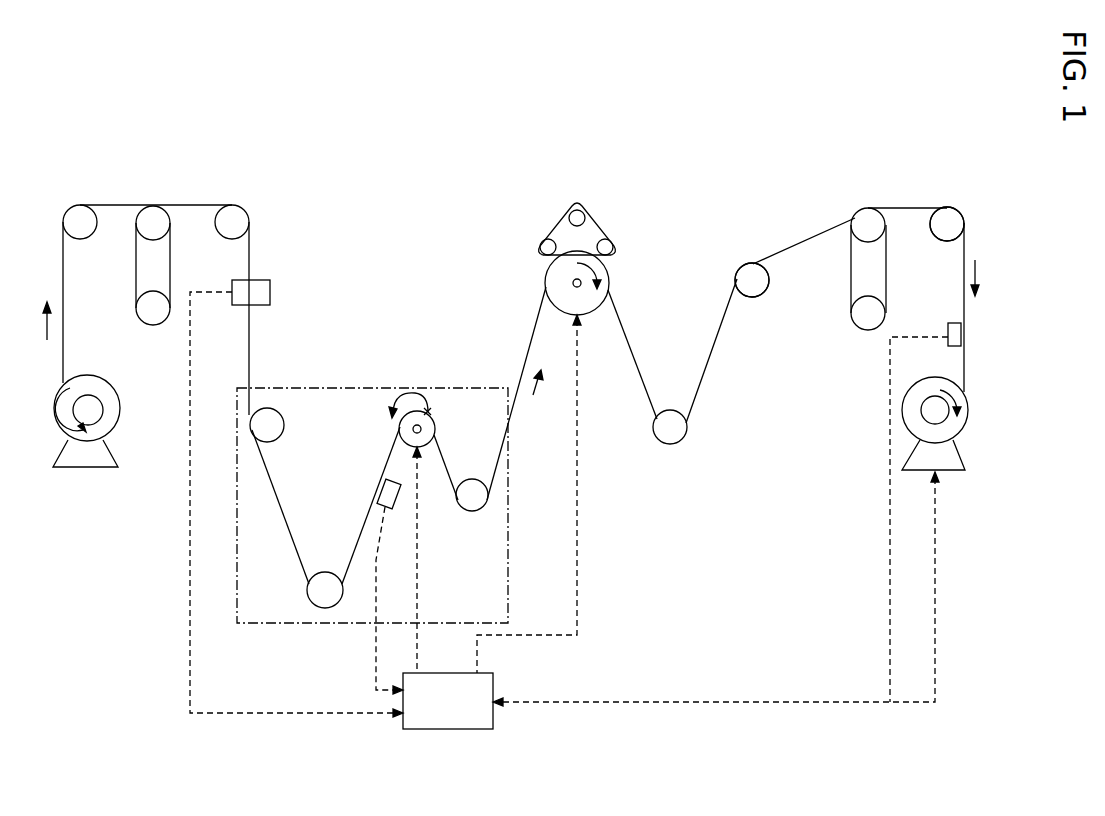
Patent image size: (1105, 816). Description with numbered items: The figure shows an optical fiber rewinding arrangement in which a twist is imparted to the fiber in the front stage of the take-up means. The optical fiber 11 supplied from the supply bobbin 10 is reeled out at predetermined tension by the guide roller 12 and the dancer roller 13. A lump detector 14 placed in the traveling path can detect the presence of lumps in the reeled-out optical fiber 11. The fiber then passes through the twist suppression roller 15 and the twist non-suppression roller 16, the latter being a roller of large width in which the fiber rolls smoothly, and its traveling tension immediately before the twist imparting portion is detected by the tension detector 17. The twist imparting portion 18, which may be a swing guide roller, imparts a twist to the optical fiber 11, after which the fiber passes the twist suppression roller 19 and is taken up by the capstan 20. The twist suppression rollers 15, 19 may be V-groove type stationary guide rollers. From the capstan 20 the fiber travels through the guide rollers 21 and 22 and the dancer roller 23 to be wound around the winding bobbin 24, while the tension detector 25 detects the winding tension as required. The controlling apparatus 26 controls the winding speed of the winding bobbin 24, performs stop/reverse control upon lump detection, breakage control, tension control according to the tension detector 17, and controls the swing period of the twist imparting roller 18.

The supply bobbin 10 is at (98, 390).
The optical fiber 11 is at (65, 291).
The guide roller 12 is at (78, 213).
The dancer roller 13 is at (143, 308).
The lump detector 14 is at (270, 295).
The twist suppression roller 15 is at (283, 430).
The twist non-suppression roller 16 is at (325, 600).
The tension detector 17 is at (381, 490).
The twist imparting portion 18 is at (427, 428).
The twist suppression roller 19 is at (470, 504).
The capstan 20 is at (558, 268).
The guide roller 21 is at (687, 435).
The guide roller 22 is at (737, 265).
The dancer roller 23 is at (858, 321).
The winding bobbin 24 is at (948, 461).
The tension detector 25 is at (950, 323).
The controlling apparatus 26 is at (495, 717).